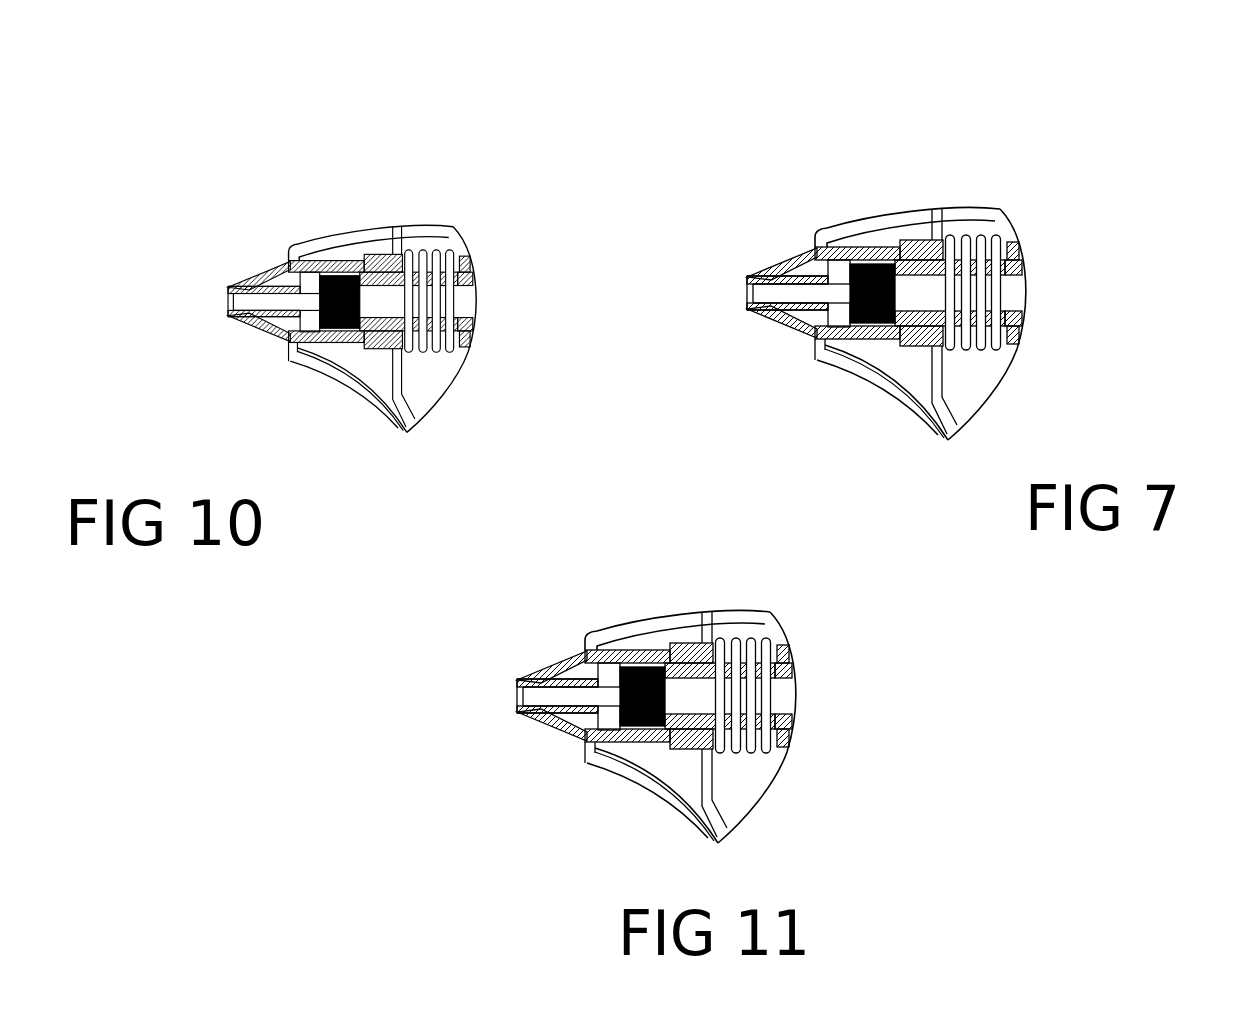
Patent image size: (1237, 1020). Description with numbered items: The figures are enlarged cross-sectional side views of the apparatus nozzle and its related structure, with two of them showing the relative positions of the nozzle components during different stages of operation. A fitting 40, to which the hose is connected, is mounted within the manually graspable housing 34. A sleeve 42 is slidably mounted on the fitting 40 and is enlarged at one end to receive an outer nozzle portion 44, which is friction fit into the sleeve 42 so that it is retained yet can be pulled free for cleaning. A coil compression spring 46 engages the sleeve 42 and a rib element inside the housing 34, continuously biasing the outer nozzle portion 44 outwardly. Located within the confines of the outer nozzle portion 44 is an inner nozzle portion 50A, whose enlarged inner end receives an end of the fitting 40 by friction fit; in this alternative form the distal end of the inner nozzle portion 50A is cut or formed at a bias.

In FIG. 10, the housing 34 is at (392, 225).
In FIG. 7, the housing 34 is at (975, 382).
In FIG. 11, the housing 34 is at (632, 622).
In FIG. 10, the fitting 40 is at (468, 257).
In FIG. 7, the fitting 40 is at (1023, 250).
In FIG. 11, the fitting 40 is at (790, 735).
In FIG. 10, the sleeve 42 is at (378, 348).
In FIG. 7, the sleeve 42 is at (908, 243).
In FIG. 11, the sleeve 42 is at (690, 645).
In FIG. 10, the outer nozzle portion 44 is at (313, 257).
In FIG. 7, the outer nozzle portion 44 is at (795, 252).
In FIG. 11, the outer nozzle portion 44 is at (653, 742).
In FIG. 10, the coil compression spring 46 is at (452, 301).
In FIG. 7, the coil compression spring 46 is at (998, 289).
In FIG. 11, the coil compression spring 46 is at (770, 651).
In FIG. 10, the inner nozzle portion 50A is at (262, 318).
In FIG. 7, the inner nozzle portion 50A is at (798, 293).
In FIG. 11, the inner nozzle portion 50A is at (540, 670).